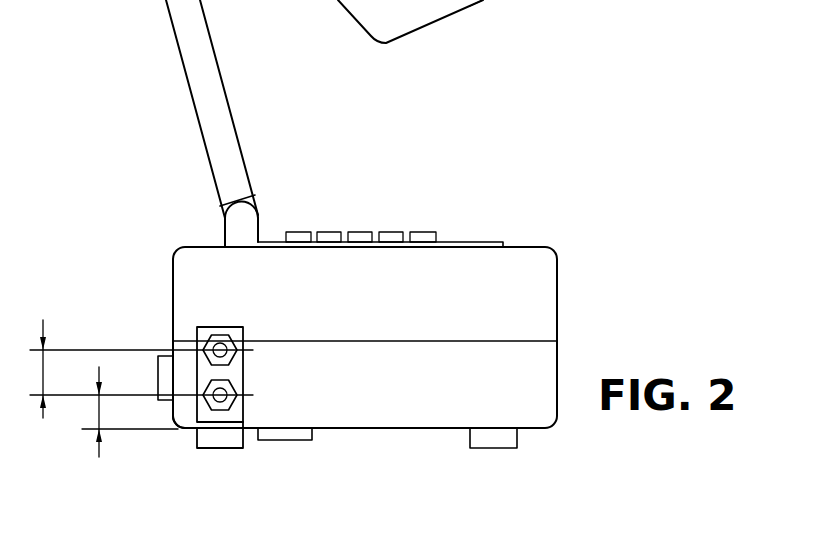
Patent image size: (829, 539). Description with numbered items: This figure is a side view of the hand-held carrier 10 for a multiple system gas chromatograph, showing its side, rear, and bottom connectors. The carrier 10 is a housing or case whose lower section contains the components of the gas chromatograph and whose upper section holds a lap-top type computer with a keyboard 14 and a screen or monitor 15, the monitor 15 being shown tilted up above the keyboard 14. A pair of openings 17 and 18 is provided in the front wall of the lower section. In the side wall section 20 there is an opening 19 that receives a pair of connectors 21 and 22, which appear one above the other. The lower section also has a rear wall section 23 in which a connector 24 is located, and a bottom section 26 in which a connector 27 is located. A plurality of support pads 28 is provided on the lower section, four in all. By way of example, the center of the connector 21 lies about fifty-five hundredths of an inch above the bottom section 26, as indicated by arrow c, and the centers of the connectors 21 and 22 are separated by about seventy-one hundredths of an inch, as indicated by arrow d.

The hand-held carrier 10 is at (362, 183).
The keyboard 14 is at (463, 242).
The screen or monitor 15 is at (192, 98).
The opening 17 is at (493, 0).
The opening 18 is at (545, 0).
The opening 19 is at (243, 372).
The side wall section 20 is at (492, 390).
The connector 21 is at (243, 412).
The connector 22 is at (222, 330).
The rear wall section 23 is at (170, 413).
The connector 24 is at (158, 373).
The bottom section 26 is at (400, 432).
The connector 27 is at (305, 440).
The support pads 28 is at (227, 436).
The arrow d is at (43, 367).
The arrow c is at (93, 410).